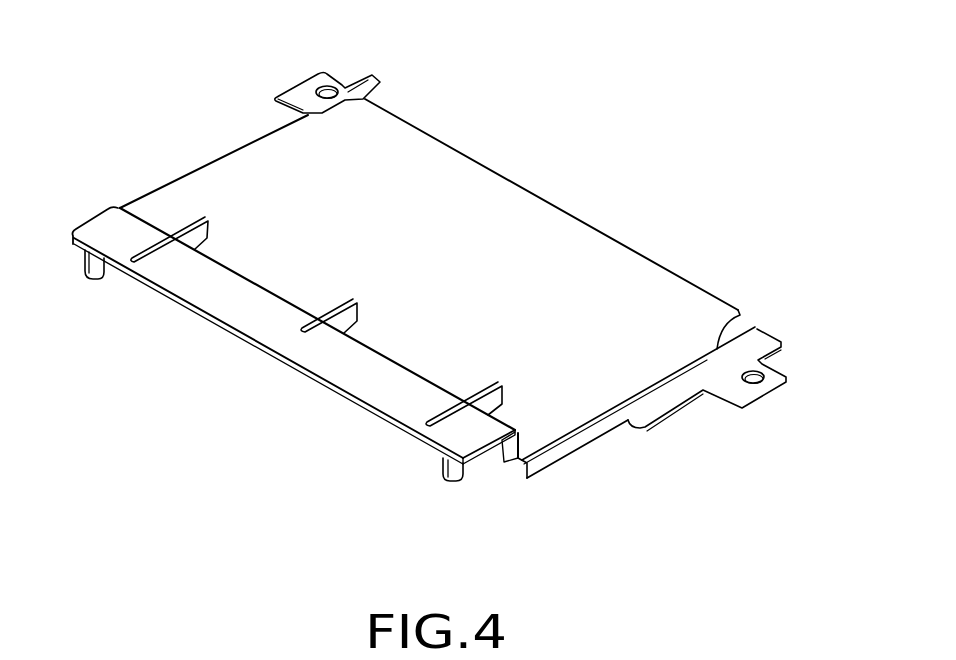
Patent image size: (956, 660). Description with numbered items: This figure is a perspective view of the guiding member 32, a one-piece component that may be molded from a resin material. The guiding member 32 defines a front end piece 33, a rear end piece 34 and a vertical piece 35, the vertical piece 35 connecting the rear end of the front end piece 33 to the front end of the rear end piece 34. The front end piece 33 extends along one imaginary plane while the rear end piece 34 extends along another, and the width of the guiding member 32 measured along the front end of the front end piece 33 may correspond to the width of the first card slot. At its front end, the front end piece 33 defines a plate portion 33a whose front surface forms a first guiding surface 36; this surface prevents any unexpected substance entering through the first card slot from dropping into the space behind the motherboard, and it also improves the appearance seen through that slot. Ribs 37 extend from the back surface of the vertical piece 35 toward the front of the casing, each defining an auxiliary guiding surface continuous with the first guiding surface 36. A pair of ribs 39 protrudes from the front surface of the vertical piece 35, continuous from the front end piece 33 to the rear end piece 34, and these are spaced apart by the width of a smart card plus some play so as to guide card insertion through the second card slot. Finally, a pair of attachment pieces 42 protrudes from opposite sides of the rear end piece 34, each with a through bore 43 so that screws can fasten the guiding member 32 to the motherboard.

The guiding member 32 is at (449, 283).
The front end piece 33 is at (293, 335).
The plate portion 33a is at (285, 348).
The rear end piece 34 is at (577, 230).
The vertical piece 35 is at (522, 437).
The first guiding surface 36 is at (247, 294).
The ribs 37 is at (201, 217).
The ribs 39 is at (102, 280).
The attachment pieces 42 is at (280, 95).
The through bore 43 is at (335, 87).